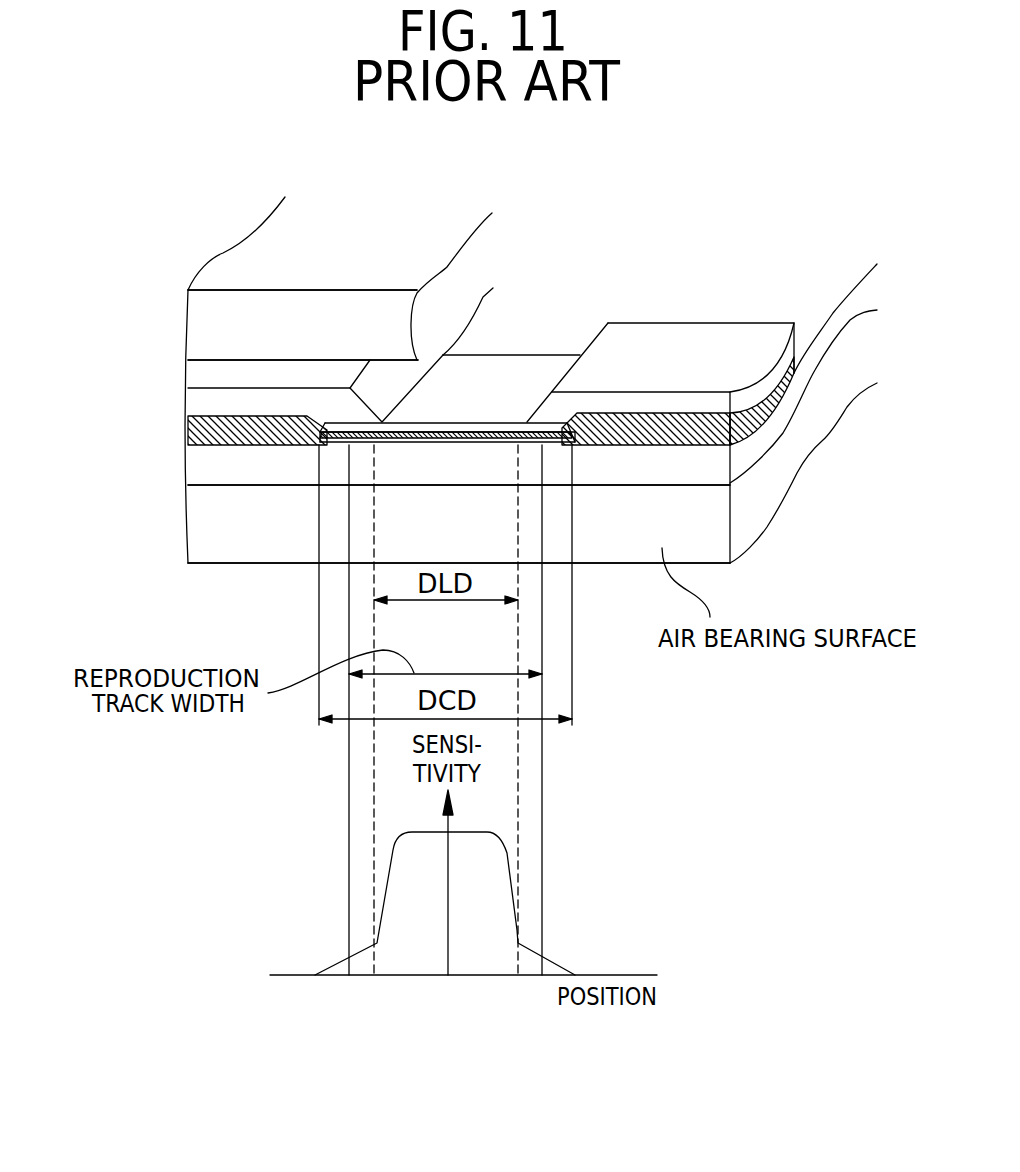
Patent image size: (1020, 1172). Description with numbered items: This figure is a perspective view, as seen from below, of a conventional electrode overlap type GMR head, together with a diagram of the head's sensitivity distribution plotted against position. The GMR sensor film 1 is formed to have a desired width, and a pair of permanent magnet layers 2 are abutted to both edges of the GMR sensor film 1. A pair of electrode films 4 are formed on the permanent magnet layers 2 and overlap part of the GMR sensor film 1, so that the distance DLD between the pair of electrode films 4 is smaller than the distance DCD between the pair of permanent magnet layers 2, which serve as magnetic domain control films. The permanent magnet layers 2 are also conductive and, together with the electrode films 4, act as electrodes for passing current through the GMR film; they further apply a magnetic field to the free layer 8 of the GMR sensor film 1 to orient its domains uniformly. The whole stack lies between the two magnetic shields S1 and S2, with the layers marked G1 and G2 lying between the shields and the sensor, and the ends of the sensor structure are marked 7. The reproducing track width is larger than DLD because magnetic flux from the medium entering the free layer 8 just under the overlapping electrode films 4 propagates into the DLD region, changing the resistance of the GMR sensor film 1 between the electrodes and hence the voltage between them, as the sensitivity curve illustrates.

The GMR sensor film 1 is at (480, 372).
The permanent magnet layer 2 is at (270, 445).
The electrode film 4 is at (298, 393).
The electrode 7 is at (333, 447).
The free layer 8 is at (485, 427).
The magnetic shield S1 is at (200, 525).
The magnetic shield S2 is at (200, 328).
The lower gap G1 is at (200, 465).
The upper gap G2 is at (200, 370).